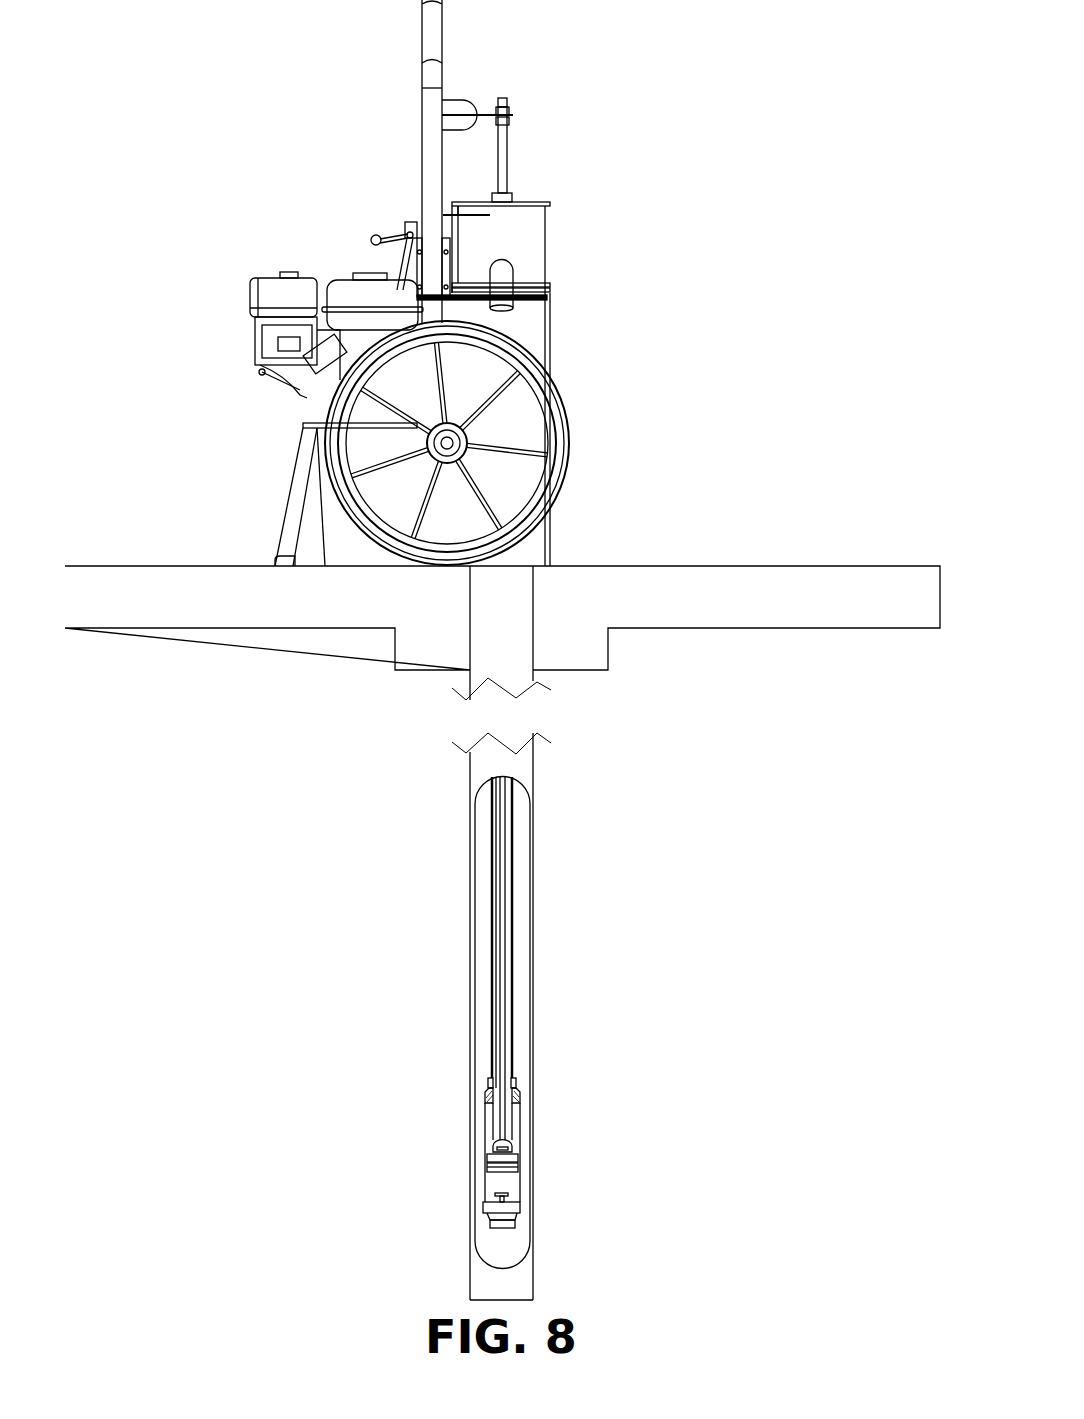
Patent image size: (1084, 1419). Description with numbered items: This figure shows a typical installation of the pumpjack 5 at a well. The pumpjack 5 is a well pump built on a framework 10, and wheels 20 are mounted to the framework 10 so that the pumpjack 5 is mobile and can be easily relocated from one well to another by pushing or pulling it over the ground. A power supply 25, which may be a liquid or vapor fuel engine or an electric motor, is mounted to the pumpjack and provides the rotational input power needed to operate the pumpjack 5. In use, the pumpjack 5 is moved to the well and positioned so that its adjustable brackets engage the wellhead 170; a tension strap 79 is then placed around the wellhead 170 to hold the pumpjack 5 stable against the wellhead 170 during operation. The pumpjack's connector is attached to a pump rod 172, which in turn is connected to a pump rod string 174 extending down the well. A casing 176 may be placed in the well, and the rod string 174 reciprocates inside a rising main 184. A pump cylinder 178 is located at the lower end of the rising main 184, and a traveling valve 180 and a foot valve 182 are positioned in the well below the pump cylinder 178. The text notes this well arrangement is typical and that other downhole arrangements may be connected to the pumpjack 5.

The pumpjack 5 is at (360, 42).
The framework 10 is at (430, 137).
The pump rod 172 is at (508, 147).
The wellhead 170 is at (547, 230).
The tension strap 79 is at (553, 296).
The power supply 25 is at (283, 298).
The wheels 20 is at (572, 440).
The rising main 184 is at (512, 875).
The pump rod string 174 is at (505, 970).
The casing 176 is at (533, 1030).
The pump cylinder 178 is at (518, 1092).
The traveling valve 180 is at (520, 1158).
The foot valve 182 is at (520, 1193).